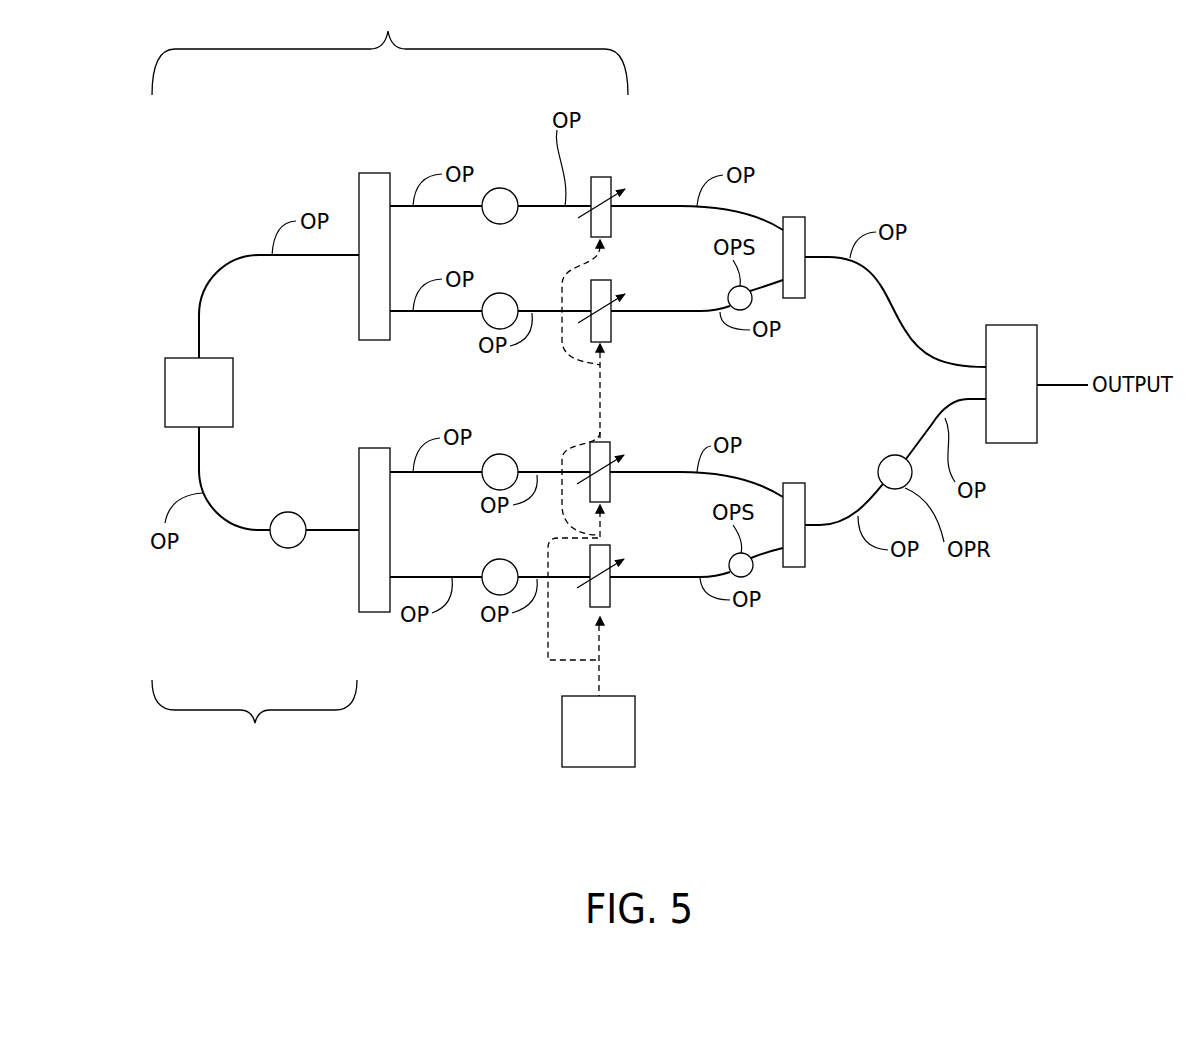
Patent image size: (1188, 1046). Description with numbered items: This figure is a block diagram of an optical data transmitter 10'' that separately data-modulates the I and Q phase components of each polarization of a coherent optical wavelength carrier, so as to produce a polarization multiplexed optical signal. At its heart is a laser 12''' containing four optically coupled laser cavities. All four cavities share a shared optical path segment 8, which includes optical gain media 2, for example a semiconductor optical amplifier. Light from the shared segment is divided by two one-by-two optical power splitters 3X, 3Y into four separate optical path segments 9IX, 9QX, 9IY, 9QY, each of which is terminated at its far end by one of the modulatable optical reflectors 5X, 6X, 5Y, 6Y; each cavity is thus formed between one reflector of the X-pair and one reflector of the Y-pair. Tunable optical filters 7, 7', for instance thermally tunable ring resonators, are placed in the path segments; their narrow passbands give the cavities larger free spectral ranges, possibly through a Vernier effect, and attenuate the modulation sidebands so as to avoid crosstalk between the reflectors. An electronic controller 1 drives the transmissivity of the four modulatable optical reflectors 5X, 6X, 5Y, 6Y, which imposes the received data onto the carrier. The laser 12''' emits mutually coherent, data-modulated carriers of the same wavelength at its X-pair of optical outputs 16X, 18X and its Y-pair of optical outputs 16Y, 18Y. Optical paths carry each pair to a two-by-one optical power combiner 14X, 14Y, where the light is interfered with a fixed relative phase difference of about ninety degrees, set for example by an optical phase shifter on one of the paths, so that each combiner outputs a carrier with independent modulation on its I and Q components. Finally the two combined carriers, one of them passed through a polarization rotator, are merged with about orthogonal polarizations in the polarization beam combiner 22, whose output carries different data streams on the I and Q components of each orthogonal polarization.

The electronic controller 1 is at (598, 731).
The optical gain media 2 is at (199, 392).
The 1×2 optical power splitter 3X is at (372, 173).
The 1×2 optical power splitter 3Y is at (370, 612).
The modulatable optical reflector 5X is at (600, 177).
The modulatable optical reflector 5Y is at (600, 442).
The modulatable optical reflector 6X is at (600, 280).
The modulatable optical reflector 6Y is at (600, 545).
The tunable optical filter 7 is at (404, 346).
The tunable optical filter 7' is at (513, 422).
The shared optical path segment 8 is at (254, 716).
The separate optical path segment 9IX is at (468, 218).
The separate optical path segment 9QX is at (468, 350).
The separate optical path segment 9IY is at (468, 492).
The separate optical path segment 9QY is at (470, 630).
The optical data transmitter 10'' is at (146, 795).
The laser 12''' is at (390, 49).
The 2×1 optical power combiner 14X is at (792, 217).
The 2×1 optical power combiner 14Y is at (792, 483).
The optical output 16X is at (611, 225).
The optical output 16Y is at (610, 490).
The optical output 18X is at (611, 325).
The optical output 18Y is at (610, 595).
The polarization beam combiner 22 is at (1010, 443).